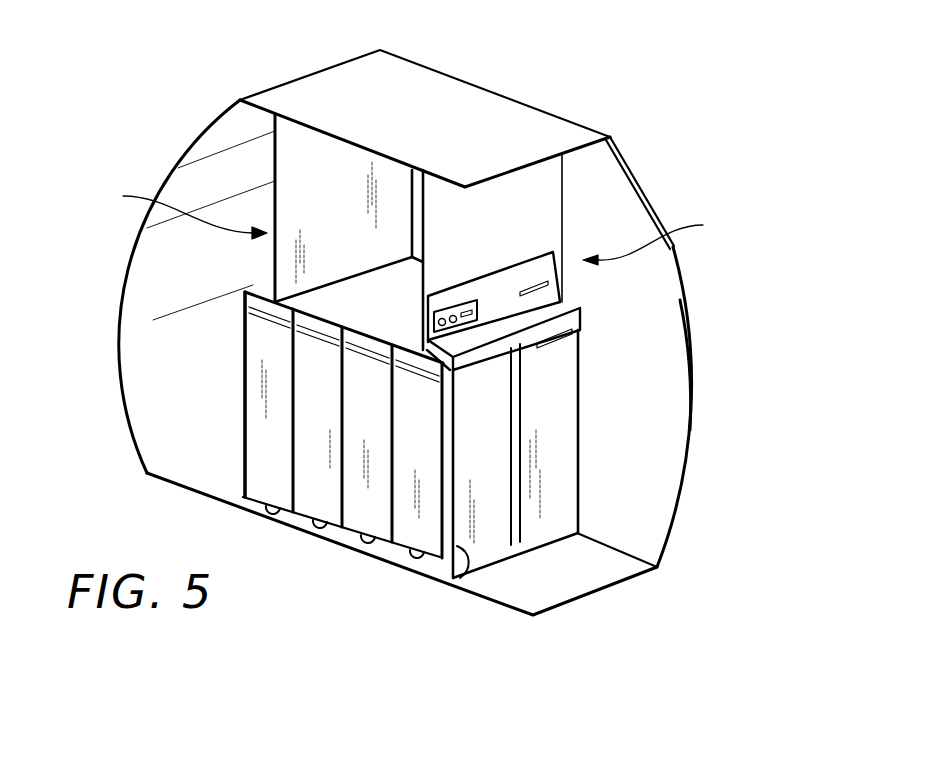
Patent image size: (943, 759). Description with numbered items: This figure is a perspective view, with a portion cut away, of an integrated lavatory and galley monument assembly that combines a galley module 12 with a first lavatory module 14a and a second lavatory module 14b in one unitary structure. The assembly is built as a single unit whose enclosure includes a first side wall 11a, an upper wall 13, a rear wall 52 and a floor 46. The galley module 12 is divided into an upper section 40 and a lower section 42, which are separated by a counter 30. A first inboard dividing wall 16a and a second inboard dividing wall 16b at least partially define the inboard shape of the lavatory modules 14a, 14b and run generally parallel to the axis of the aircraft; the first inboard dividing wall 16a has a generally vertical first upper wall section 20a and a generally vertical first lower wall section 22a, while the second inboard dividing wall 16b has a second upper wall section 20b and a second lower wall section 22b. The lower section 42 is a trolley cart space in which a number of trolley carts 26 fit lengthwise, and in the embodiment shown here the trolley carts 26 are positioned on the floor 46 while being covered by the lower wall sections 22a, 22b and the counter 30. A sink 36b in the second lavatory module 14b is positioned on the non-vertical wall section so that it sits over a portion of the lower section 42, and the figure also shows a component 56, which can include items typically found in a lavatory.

The galley module 12 is at (352, 137).
The upper wall 13 is at (538, 137).
The first side wall 11a is at (119, 332).
The first lavatory module 14a is at (180, 272).
The second lavatory module 14b is at (640, 298).
The first inboard dividing wall 16a is at (176, 212).
The second inboard dividing wall 16b is at (669, 240).
The first upper wall section 20a is at (276, 157).
The second upper wall section 20b is at (562, 228).
The first lower wall section 22a is at (242, 398).
The second lower wall section 22b is at (460, 578).
The trolley cart 26 is at (417, 554).
The counter 30 is at (349, 286).
The sink 36b is at (555, 323).
The upper section 40 is at (359, 256).
The lower section 42 is at (260, 470).
The floor 46 is at (505, 588).
The rear wall 52 is at (666, 458).
The component 56 is at (578, 413).